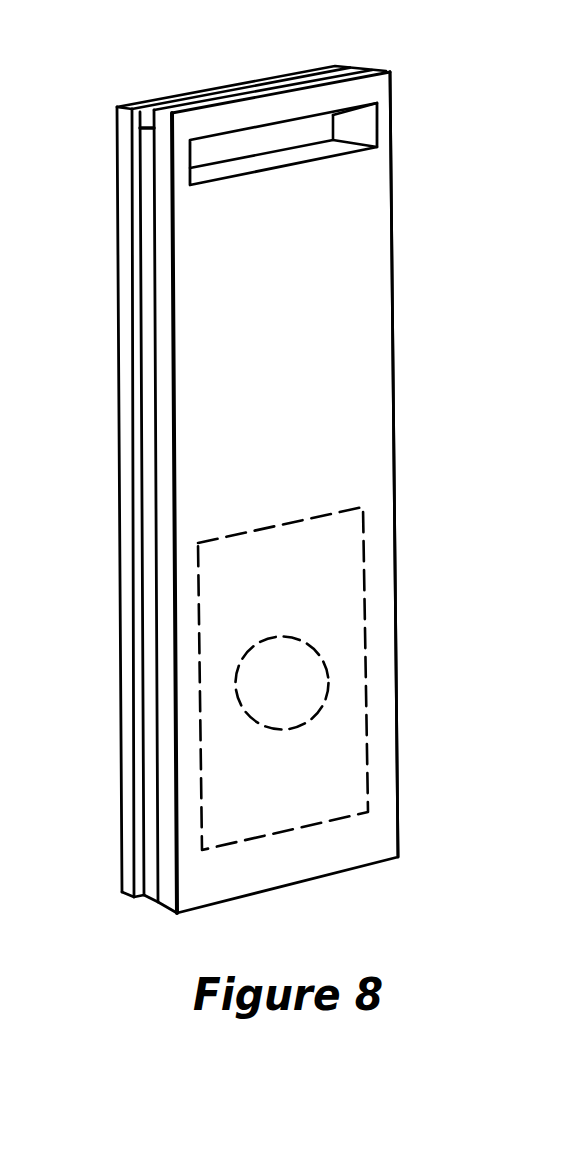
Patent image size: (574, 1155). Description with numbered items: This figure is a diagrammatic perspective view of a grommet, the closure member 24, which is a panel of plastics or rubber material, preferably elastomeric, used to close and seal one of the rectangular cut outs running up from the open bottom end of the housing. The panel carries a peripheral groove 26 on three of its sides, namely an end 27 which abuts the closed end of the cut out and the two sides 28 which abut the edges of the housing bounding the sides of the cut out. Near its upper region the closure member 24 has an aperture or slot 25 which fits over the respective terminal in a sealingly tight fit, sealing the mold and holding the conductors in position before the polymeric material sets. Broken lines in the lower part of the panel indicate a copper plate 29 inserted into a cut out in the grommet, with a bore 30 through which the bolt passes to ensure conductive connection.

The closure member 24 is at (257, 489).
The slot 25 is at (363, 127).
The peripheral groove 26 is at (133, 450).
The end 27 is at (144, 127).
The sides 28 is at (397, 302).
The copper plates 29 is at (353, 557).
The bores 30 is at (313, 677).